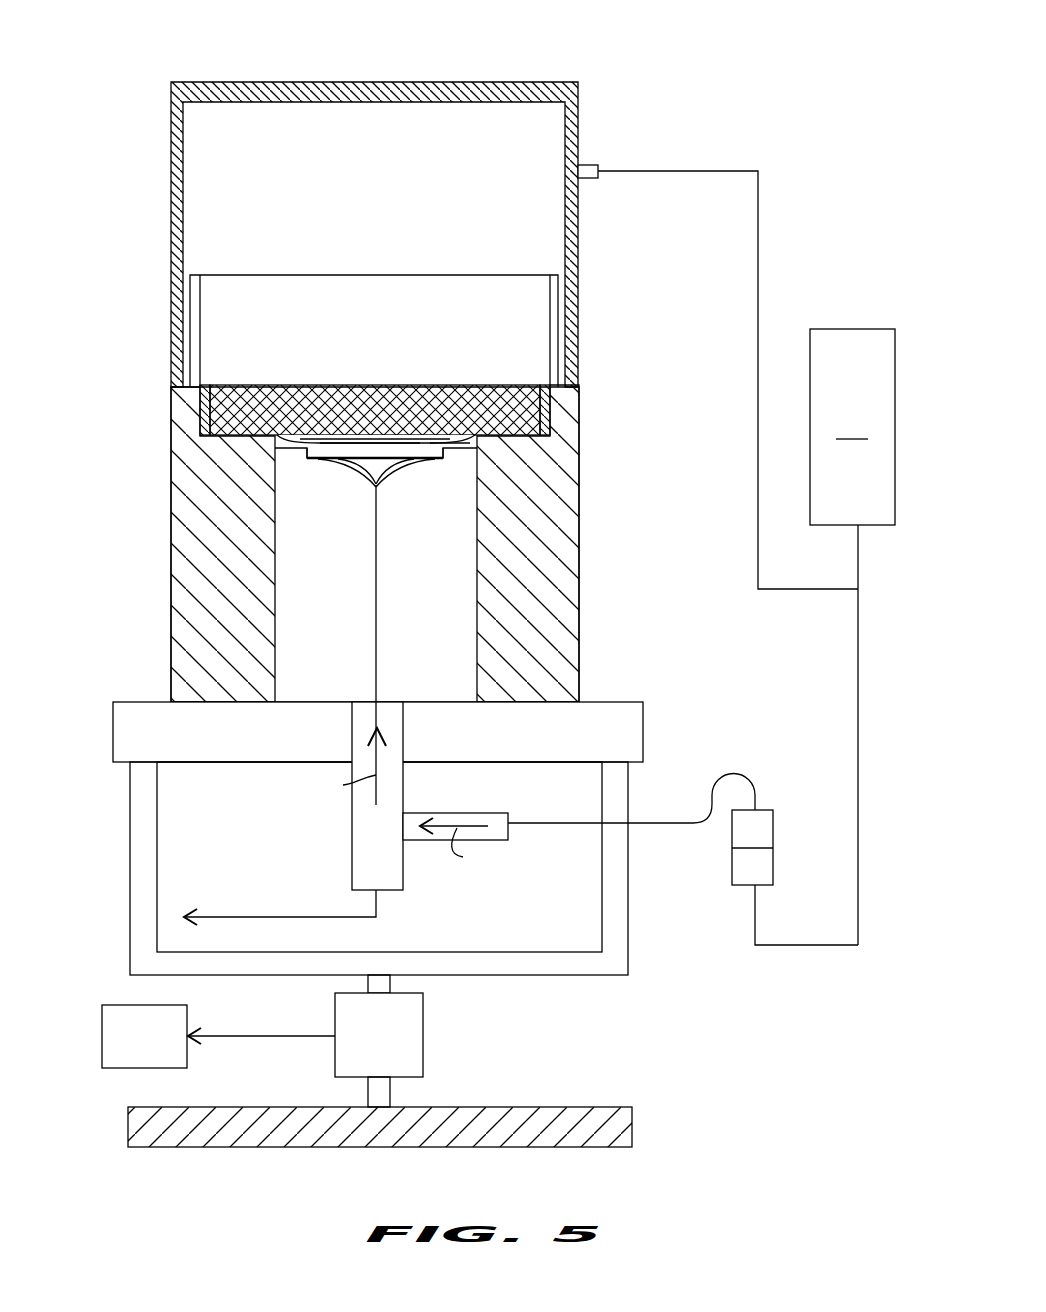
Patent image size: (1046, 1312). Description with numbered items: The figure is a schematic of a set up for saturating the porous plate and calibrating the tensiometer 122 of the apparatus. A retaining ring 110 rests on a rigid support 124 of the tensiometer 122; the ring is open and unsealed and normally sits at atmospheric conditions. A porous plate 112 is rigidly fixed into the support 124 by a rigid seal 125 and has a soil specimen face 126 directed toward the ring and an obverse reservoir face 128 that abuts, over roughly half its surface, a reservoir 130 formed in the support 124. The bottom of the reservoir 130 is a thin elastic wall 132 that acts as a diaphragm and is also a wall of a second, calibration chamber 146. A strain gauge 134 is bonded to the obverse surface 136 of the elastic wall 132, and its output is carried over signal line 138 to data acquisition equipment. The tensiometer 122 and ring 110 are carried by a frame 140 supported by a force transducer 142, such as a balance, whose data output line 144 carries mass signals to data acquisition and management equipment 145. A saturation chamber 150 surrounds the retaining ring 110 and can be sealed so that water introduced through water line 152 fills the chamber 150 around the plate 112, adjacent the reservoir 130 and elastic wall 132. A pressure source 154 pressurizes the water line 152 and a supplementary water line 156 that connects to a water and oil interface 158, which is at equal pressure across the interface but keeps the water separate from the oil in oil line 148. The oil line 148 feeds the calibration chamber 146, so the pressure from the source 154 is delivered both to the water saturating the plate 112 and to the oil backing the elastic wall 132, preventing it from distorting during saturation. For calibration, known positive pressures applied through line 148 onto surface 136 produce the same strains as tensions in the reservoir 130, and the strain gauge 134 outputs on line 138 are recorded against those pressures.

The retaining ring 110 is at (558, 275).
The porous plate 112 is at (259, 413).
The tensiometer 122 is at (152, 424).
The rigid support 124 is at (171, 512).
The rigid seal 125 is at (550, 413).
The soil specimen face 126 is at (500, 393).
The obverse reservoir face 128 is at (500, 437).
The reservoir 130 is at (295, 440).
The elastic wall 132 is at (328, 437).
The strain gauge 134 is at (446, 459).
The obverse surface of the elastic wall 136 is at (299, 455).
The signal line 138 is at (376, 612).
The frame 140 is at (618, 786).
The force transducer 142 is at (423, 1037).
The data output line 144 is at (280, 1036).
The data acquisition and management equipment 145 is at (130, 1025).
The calibration chamber 146 is at (441, 647).
The oil line 148 is at (468, 813).
The saturation chamber 150 is at (373, 90).
The water line 152 is at (665, 171).
The pressure source 154 is at (852, 427).
The supplementary water line 156 is at (860, 722).
The water and oil interface 158 is at (773, 826).